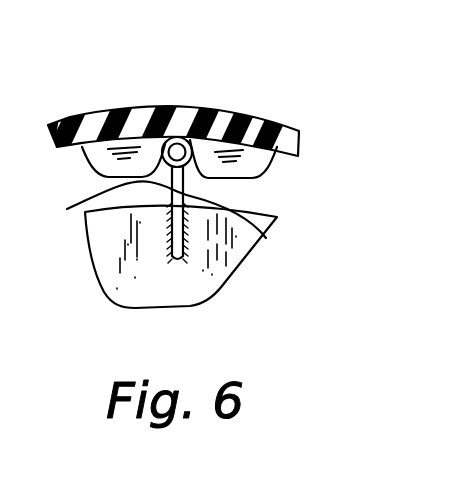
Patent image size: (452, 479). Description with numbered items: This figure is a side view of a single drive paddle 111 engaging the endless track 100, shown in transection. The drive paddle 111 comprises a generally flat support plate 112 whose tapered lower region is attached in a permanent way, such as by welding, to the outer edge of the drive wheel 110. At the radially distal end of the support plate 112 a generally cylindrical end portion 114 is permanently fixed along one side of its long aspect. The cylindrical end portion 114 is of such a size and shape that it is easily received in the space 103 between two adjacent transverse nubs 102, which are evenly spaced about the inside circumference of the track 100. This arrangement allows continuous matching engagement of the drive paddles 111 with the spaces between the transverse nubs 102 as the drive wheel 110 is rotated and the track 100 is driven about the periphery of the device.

The track 100 is at (286, 76).
The cylindrical end portion 114 is at (182, 137).
The transverse nubs 102 is at (104, 163).
The space 103 is at (139, 209).
The drive wheel 110 is at (214, 279).
The drive paddle 111 is at (238, 194).
The support plate 112 is at (254, 236).